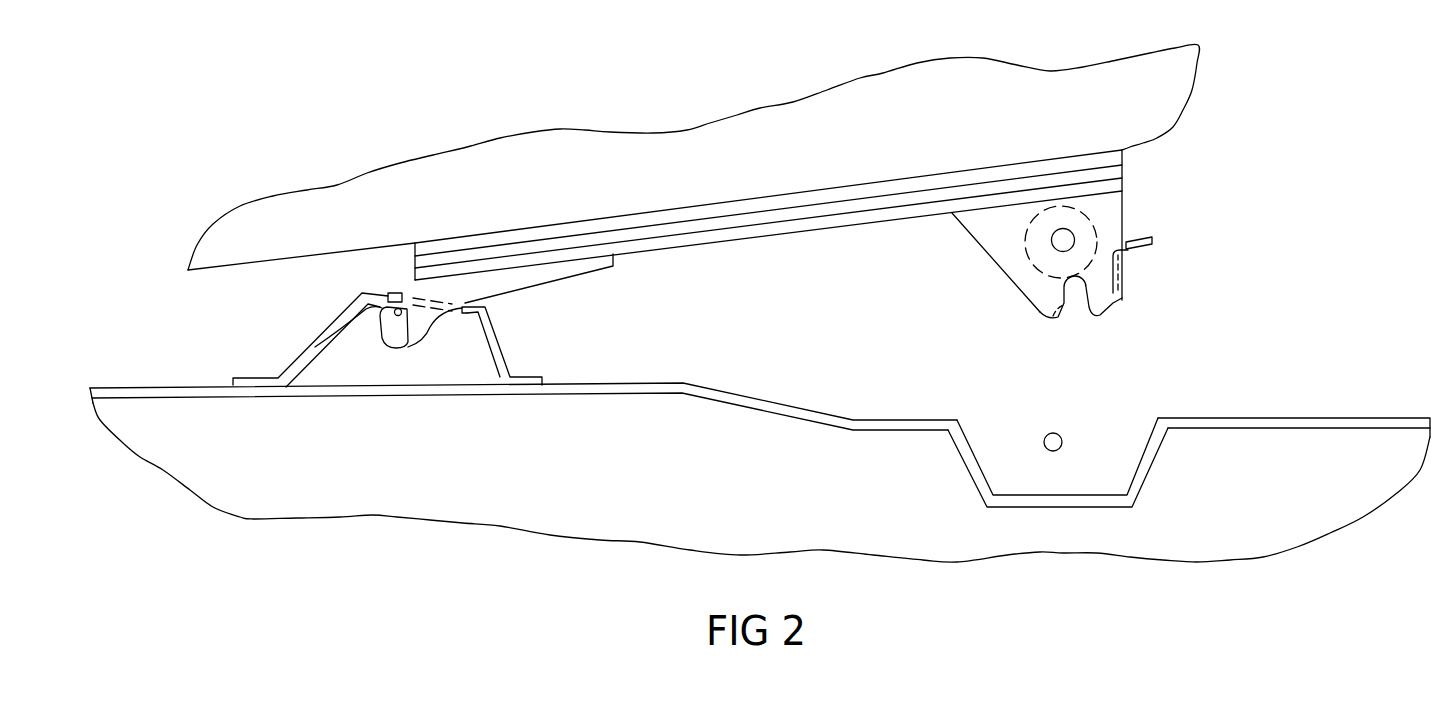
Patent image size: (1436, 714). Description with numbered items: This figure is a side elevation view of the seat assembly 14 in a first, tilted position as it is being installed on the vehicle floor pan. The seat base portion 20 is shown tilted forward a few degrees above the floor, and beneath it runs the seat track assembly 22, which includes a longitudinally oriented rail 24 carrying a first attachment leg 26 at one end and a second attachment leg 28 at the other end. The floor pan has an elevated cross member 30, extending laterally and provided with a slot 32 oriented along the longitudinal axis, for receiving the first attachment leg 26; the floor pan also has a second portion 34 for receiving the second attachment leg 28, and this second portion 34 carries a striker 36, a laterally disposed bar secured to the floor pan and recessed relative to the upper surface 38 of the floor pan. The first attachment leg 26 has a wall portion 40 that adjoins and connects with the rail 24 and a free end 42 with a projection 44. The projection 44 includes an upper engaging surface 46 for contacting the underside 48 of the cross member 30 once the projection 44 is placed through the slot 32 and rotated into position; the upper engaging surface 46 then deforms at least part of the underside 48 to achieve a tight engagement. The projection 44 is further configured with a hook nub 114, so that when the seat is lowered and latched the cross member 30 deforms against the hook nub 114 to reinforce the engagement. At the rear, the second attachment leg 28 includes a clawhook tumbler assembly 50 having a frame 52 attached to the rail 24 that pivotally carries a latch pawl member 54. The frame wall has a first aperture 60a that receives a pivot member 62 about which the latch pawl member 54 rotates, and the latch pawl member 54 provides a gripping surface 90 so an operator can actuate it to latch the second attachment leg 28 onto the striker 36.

The seat assembly 14 is at (1219, 184).
The seat base portion 20 is at (768, 192).
The seat track assembly 22 is at (370, 265).
The rail 24 is at (1138, 145).
The first attachment leg 26 is at (436, 349).
The second attachment leg 28 is at (1156, 264).
The cross member 30 is at (495, 340).
The slot 32 is at (412, 299).
The second portion 34 is at (1121, 418).
The striker 36 is at (1050, 433).
The upper surface 38 is at (988, 457).
The wall portion 40 is at (517, 282).
The free end 42 is at (402, 294).
The projection 44 is at (390, 345).
The upper engaging surface 46 is at (412, 299).
The underside 48 is at (322, 330).
The clawhook tumbler assembly 50 is at (1010, 303).
The frame 52 is at (980, 228).
The latch pawl member 54 is at (1104, 318).
The first aperture 60a is at (1074, 236).
The pivot member 62 is at (1050, 247).
The gripping surface 90 is at (1140, 241).
The hook nub 114 is at (304, 353).